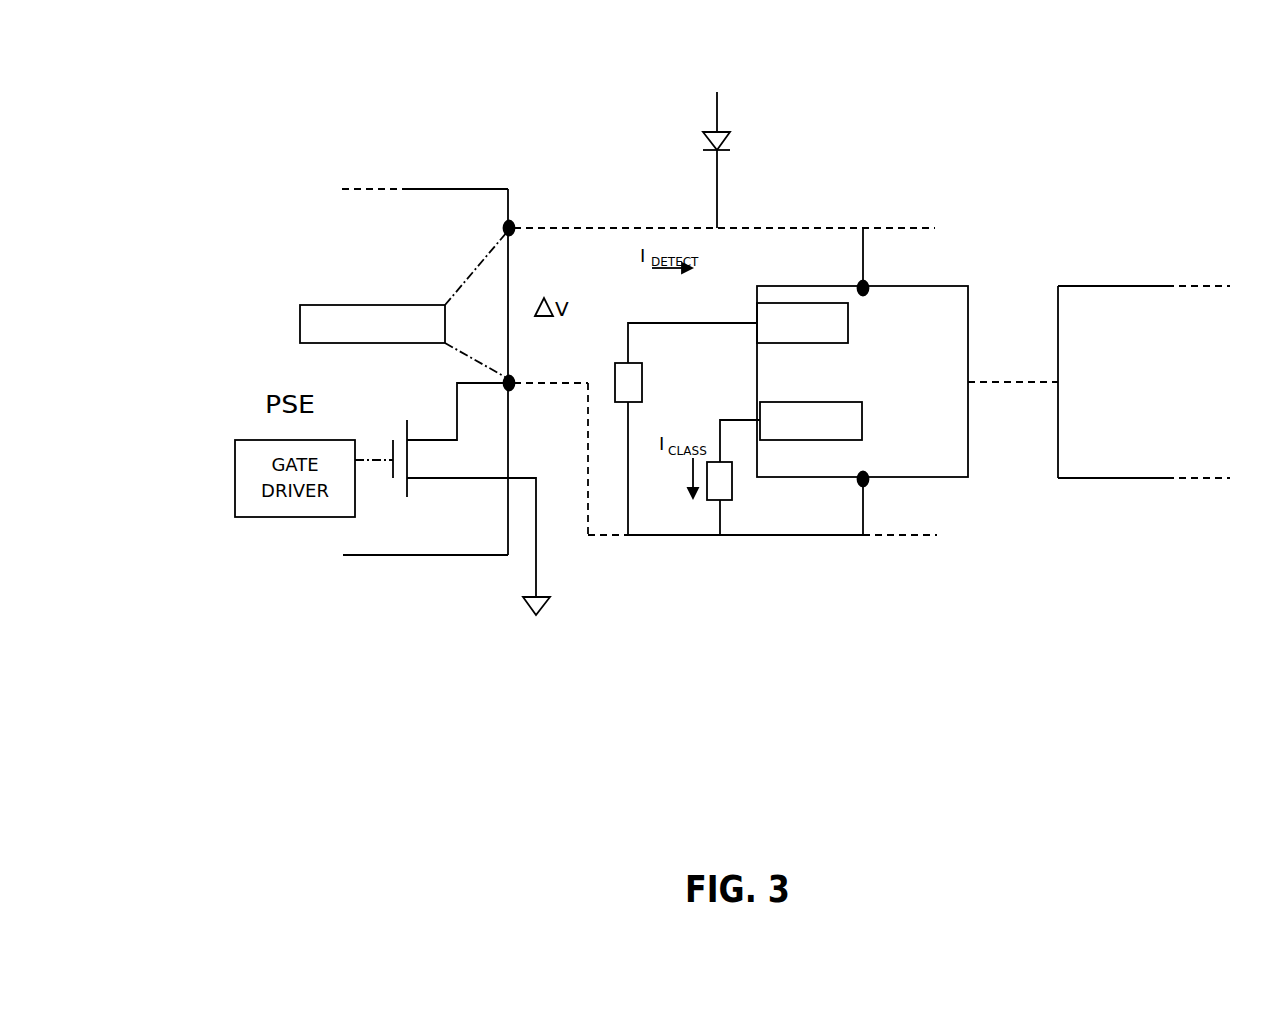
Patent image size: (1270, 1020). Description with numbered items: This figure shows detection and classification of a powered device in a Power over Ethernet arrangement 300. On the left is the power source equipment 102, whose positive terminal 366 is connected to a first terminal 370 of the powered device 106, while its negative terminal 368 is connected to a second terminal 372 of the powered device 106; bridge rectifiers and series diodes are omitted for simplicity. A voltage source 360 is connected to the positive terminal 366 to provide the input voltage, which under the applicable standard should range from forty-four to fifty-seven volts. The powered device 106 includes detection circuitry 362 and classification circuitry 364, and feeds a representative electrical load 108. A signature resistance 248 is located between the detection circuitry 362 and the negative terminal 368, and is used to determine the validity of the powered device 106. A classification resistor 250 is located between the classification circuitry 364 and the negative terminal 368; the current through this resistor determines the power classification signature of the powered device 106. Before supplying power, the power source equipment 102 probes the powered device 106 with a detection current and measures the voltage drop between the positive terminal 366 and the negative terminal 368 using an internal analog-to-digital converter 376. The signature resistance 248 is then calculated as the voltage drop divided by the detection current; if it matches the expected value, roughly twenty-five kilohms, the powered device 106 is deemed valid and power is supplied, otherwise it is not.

The detection and classification system 300 is at (1132, 69).
The power source equipment 102 is at (445, 189).
The powered device 106 is at (943, 286).
The electrical load 108 is at (1137, 286).
The signature resistance 248 is at (642, 381).
The classification resistor 250 is at (724, 502).
The voltage source 360 is at (730, 83).
The detection circuitry 362 is at (803, 343).
The classification circuitry 364 is at (862, 420).
The positive terminal 366 is at (512, 236).
The negative terminal 368 is at (513, 391).
The first terminal 370 is at (865, 296).
The second terminal 372 is at (869, 485).
The analog-to-digital converter 376 is at (300, 322).